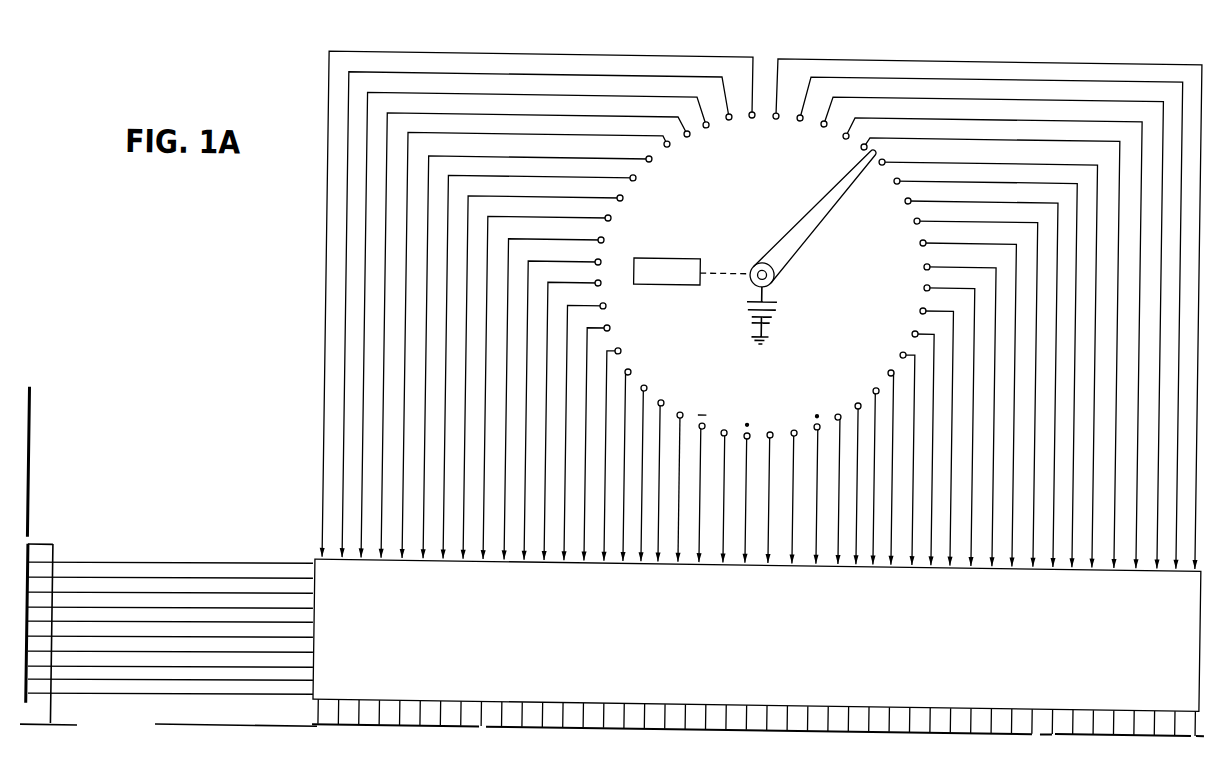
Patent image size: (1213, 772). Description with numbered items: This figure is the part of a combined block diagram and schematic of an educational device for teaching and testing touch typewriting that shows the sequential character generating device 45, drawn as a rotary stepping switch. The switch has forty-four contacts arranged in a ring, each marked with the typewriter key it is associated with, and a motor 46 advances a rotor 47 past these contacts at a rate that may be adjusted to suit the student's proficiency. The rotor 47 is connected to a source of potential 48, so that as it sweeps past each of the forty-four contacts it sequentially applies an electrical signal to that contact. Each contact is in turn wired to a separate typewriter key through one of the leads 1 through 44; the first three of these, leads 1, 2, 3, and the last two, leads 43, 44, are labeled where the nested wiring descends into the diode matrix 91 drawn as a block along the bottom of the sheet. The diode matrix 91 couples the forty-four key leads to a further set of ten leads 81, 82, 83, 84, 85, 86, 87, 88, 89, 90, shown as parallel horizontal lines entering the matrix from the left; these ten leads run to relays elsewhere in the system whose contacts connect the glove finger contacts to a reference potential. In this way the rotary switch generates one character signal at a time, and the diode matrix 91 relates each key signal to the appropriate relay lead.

The lead 1 is at (326, 556).
The lead 2 is at (346, 556).
The lead 3 is at (366, 556).
The lead 43 is at (1180, 548).
The lead 44 is at (1199, 548).
The sequential character generating device 45 is at (799, 54).
The motor 46 is at (699, 259).
The rotor 47 is at (800, 244).
The source of potential 48 is at (775, 303).
The lead 81 is at (98, 702).
The lead 82 is at (133, 688).
The lead 83 is at (175, 674).
The lead 84 is at (222, 659).
The lead 85 is at (262, 643).
The lead 86 is at (118, 631).
The lead 87 is at (148, 616).
The lead 88 is at (192, 600).
The lead 89 is at (226, 585).
The lead 90 is at (264, 570).
The diode matrix 91 is at (321, 564).